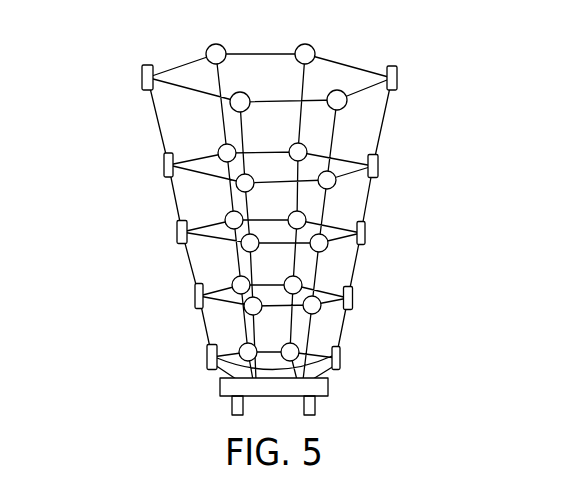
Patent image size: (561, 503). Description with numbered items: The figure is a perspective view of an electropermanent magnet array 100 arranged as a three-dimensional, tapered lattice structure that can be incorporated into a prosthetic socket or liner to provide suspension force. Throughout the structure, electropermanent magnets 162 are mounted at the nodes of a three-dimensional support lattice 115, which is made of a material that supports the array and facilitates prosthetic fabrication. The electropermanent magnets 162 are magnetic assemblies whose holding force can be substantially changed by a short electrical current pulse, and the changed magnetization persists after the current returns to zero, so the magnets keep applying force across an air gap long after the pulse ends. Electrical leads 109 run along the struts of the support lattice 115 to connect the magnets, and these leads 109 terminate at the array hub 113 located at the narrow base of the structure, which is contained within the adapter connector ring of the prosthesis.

The lattice support structure 100 is at (266, 213).
The electrical leads 109 is at (382, 127).
The array hub 113 is at (328, 391).
The three-dimensional support lattice 115 is at (348, 178).
The electropermanent magnets 162 is at (314, 50).